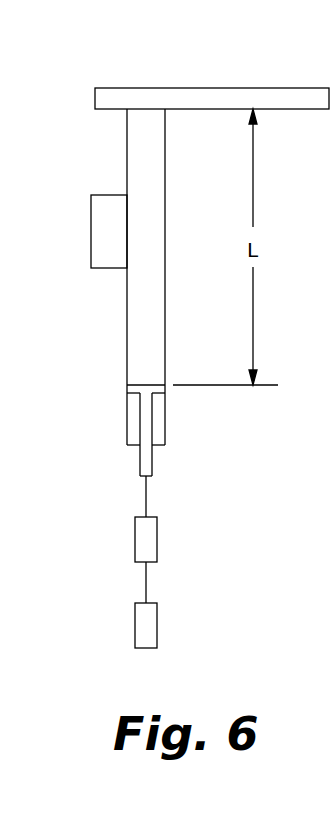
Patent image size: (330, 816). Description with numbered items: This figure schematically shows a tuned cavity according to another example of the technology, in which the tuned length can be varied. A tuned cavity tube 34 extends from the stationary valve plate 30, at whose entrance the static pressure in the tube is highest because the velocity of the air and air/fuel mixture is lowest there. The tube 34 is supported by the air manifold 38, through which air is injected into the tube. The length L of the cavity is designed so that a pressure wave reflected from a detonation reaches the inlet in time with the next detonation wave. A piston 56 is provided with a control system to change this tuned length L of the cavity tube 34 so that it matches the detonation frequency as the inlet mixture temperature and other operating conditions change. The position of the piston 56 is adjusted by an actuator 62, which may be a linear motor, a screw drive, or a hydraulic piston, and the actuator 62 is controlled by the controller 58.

The stationary valve plate 30 is at (295, 88).
The tuned cavity tube 34 is at (157, 330).
The air manifold 38 is at (91, 268).
The piston 56 is at (140, 462).
The actuator 62 is at (135, 530).
The controller 58 is at (135, 615).